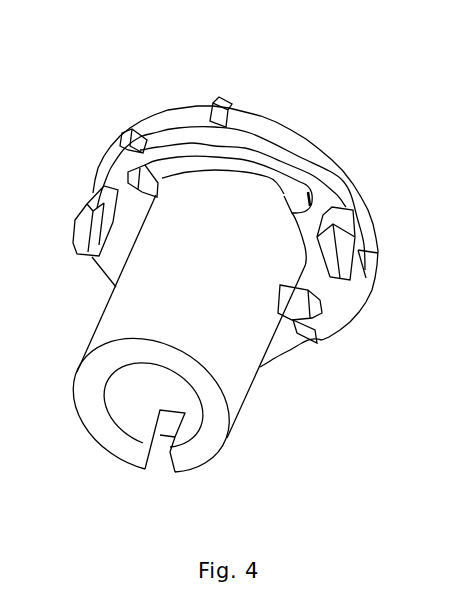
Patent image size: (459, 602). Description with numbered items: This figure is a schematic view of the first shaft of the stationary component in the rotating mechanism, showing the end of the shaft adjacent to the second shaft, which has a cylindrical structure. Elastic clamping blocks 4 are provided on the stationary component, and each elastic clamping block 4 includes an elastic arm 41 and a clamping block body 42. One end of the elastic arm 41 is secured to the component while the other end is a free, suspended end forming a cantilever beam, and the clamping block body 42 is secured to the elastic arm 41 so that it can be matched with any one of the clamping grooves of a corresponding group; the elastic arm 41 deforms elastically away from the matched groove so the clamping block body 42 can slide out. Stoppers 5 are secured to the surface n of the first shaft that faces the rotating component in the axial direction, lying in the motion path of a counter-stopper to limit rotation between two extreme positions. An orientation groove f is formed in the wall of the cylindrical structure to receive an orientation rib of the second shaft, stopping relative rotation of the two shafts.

The elastic clamping block 4 is at (235, 194).
The elastic arm 41 is at (260, 125).
The clamping block body 42 is at (232, 82).
The stopper 5 is at (83, 230).
The surface of the first shaft n is at (332, 202).
The orientation groove f is at (160, 462).